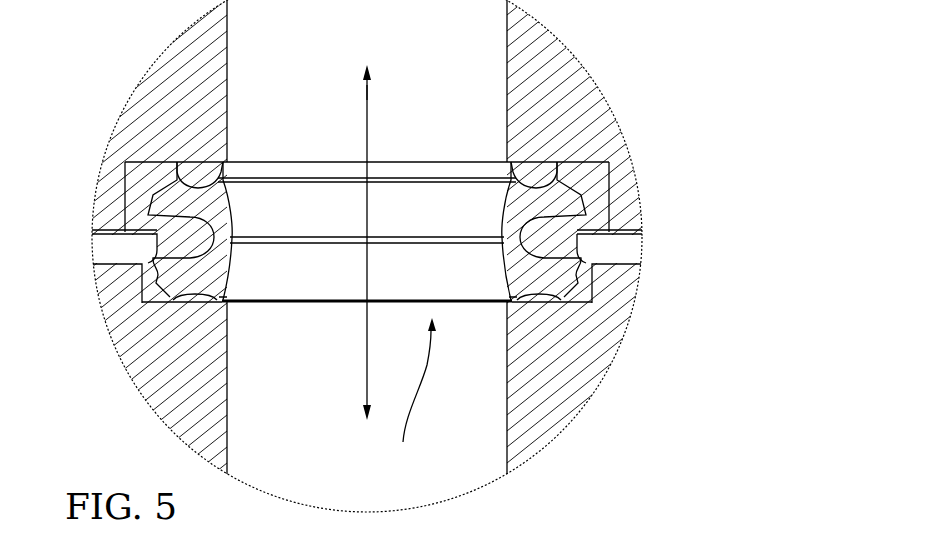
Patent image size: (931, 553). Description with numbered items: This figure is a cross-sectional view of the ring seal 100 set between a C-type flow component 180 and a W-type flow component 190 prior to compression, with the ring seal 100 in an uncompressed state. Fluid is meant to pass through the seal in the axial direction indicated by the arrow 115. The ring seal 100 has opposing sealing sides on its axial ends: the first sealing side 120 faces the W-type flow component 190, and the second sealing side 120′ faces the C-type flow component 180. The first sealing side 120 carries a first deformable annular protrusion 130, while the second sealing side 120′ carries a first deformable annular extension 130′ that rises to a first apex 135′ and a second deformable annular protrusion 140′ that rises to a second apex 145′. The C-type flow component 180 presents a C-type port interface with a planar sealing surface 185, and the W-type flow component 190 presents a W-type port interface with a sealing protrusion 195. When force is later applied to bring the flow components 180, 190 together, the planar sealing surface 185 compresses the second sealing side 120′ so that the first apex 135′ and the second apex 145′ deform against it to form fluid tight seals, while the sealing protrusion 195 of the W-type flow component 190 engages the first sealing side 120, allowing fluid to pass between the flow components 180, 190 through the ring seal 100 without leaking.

The ring seal 100 is at (321, 210).
The arrow indicating axial direction 115 is at (368, 93).
The first sealing side 120 is at (353, 130).
The second sealing side 120′ is at (406, 400).
The first deformable annular protrusion 130 is at (178, 178).
The first deformable annular extension 130′ is at (150, 300).
The first apex 135′ is at (603, 264).
The second deformable annular protrusion 140′ is at (223, 303).
The second apex 145′ is at (223, 303).
The C-type flow component 180 is at (622, 329).
The planar sealing surface 185 is at (545, 304).
The W-type flow component 190 is at (622, 132).
The sealing protrusion 195 is at (513, 170).